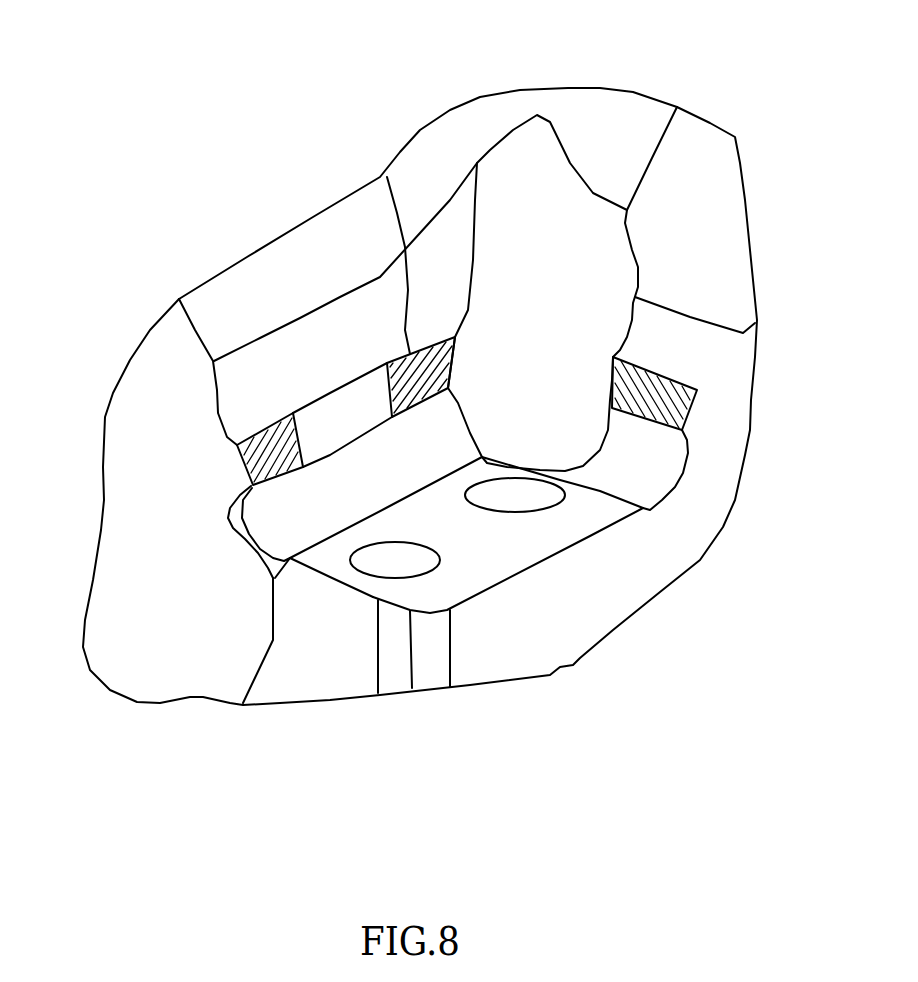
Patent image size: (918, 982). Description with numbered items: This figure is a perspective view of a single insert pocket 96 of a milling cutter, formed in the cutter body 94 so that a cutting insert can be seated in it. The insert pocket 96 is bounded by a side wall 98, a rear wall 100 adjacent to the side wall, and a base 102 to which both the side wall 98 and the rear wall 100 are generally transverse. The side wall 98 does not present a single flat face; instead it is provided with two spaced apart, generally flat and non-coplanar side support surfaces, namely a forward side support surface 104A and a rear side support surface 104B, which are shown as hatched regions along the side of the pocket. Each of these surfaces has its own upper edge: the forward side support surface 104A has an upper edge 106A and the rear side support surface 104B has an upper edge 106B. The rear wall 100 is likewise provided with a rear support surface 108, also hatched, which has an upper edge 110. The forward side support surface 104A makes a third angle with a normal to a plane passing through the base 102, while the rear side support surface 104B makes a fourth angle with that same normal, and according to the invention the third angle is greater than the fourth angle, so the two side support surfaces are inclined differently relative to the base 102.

The cutter body 94 is at (420, 370).
The insert pocket 96 is at (291, 655).
The side wall 98 is at (257, 527).
The rear wall 100 is at (727, 513).
The base 102 is at (496, 604).
The forward side support surface 104A is at (205, 337).
The rear side support surface 104B is at (357, 243).
The upper edge 106A is at (264, 345).
The upper edge 106B is at (415, 244).
The rear support surface 108 is at (721, 344).
The upper edge 110 is at (722, 289).